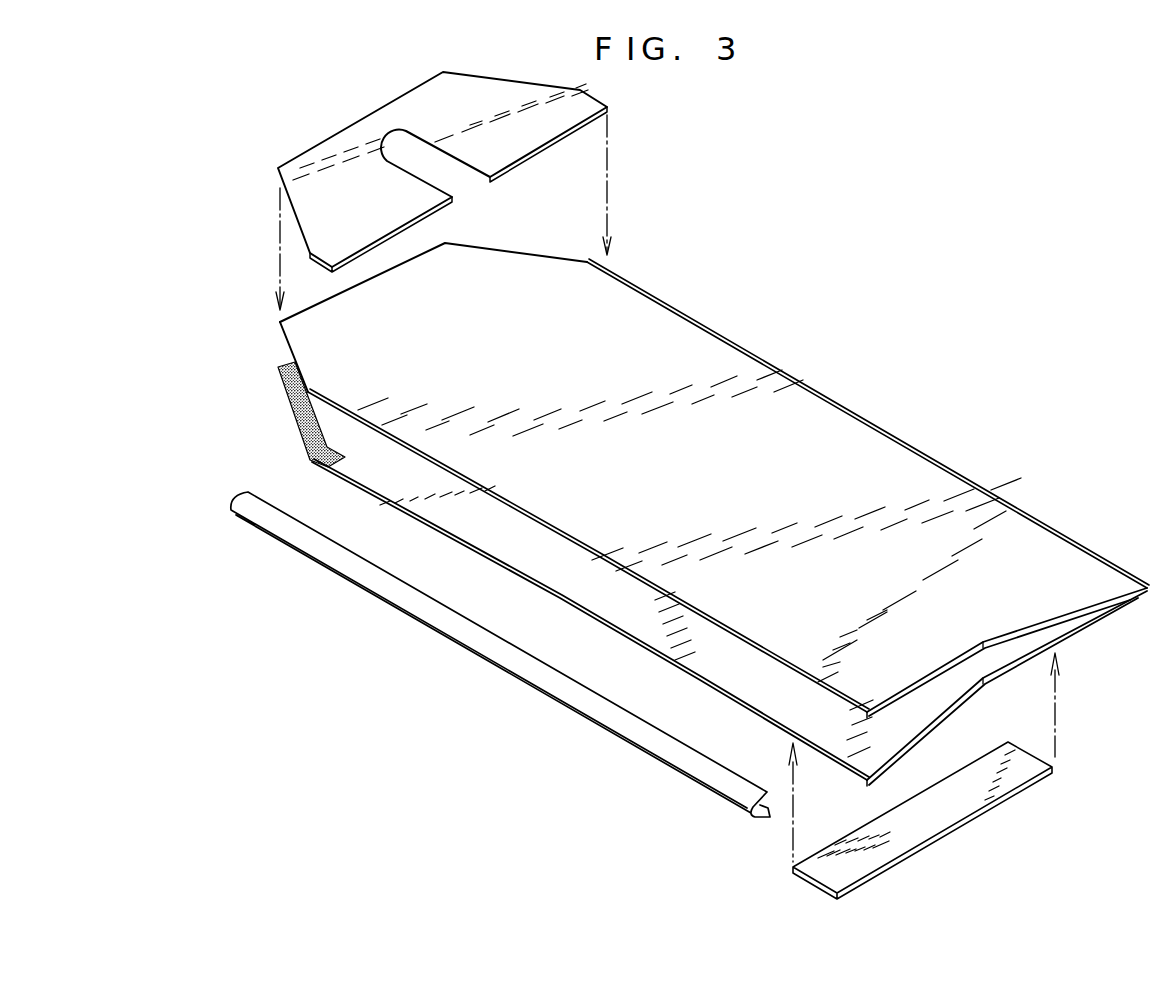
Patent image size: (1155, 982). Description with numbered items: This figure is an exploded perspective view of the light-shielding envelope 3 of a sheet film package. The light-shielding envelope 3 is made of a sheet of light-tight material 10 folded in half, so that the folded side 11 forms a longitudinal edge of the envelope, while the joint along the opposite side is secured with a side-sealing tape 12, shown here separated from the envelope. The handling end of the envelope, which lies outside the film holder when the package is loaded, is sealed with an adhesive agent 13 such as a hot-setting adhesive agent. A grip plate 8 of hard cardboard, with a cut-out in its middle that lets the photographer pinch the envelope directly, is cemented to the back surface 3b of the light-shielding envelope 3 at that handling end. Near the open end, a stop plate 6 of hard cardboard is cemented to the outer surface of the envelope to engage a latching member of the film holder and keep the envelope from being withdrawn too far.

The light-shielding envelope 3 is at (956, 472).
The back surface 3b is at (680, 333).
The stop plate 6 is at (955, 817).
The grip plate 8 is at (347, 140).
The sheet of light-tight material 10 is at (1058, 630).
The folded side 11 is at (740, 350).
The side-sealing tape 12 is at (417, 622).
The adhesive agent 13 is at (293, 410).